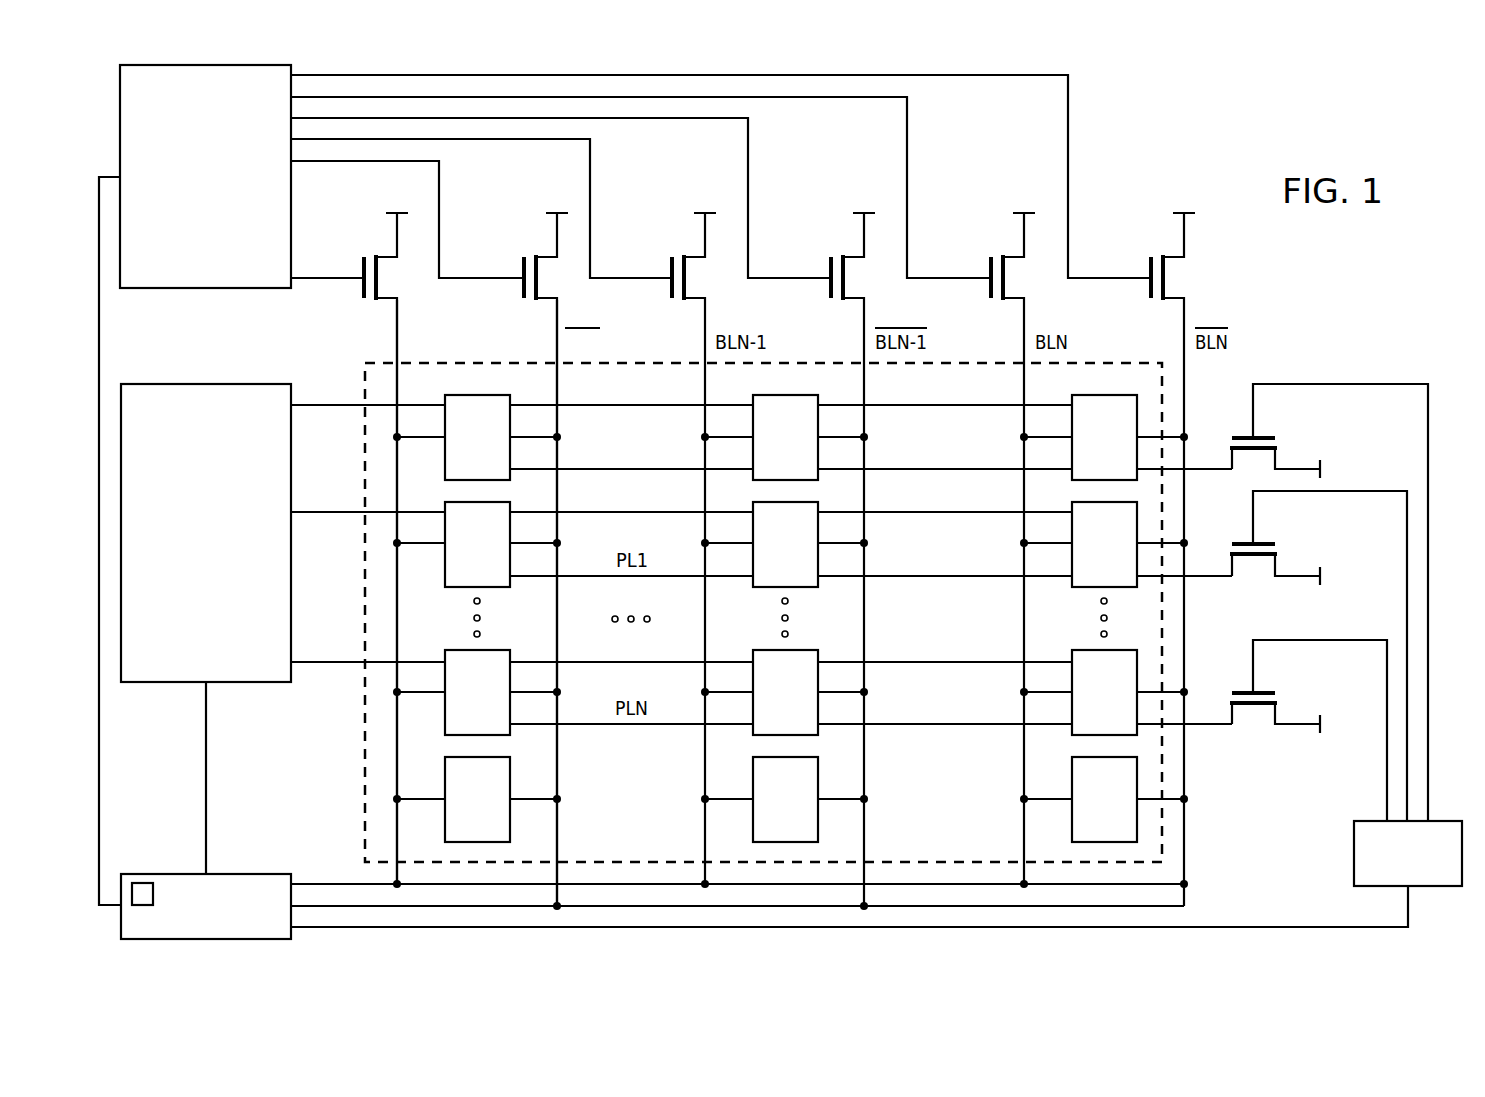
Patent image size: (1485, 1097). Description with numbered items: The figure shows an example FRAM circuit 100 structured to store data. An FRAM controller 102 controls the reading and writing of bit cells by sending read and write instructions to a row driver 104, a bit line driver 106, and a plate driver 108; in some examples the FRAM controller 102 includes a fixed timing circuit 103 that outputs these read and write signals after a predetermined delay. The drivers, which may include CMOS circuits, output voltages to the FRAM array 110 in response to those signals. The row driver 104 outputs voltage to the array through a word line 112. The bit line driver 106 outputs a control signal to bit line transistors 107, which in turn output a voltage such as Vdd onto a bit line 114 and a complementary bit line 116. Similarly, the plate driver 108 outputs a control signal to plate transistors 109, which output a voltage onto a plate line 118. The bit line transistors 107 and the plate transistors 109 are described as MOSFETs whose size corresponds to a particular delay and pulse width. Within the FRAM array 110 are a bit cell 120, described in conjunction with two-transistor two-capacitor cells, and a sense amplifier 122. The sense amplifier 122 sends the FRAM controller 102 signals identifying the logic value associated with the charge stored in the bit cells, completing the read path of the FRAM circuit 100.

The FRAM circuit 100 is at (1311, 139).
The FRAM controller 102 is at (186, 874).
The fixed timing circuit 103 is at (143, 883).
The row driver 104 is at (185, 384).
The bit line driver 106 is at (226, 221).
The bit line transistors 107 is at (362, 271).
The plate driver 108 is at (1440, 821).
The plate transistors 109 is at (1245, 437).
The FRAM array 110 is at (366, 730).
The word line 112 is at (333, 405).
The bit line 114 is at (400, 345).
The complementary bit line 116 is at (556, 345).
The plate line 118 is at (605, 468).
The bit cell 120 is at (497, 468).
The sense amplifier 122 is at (497, 830).